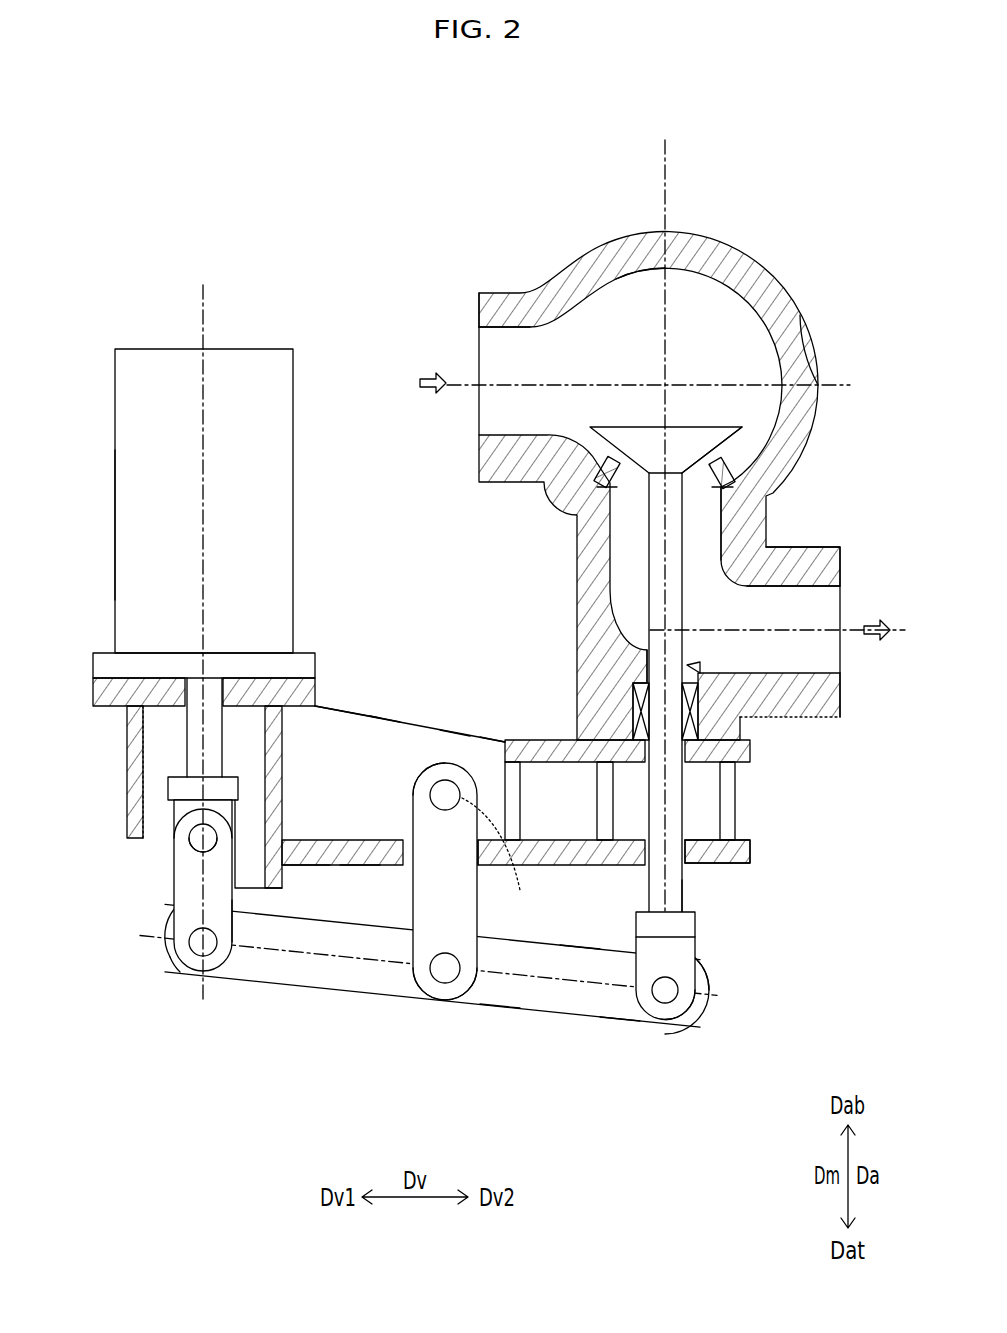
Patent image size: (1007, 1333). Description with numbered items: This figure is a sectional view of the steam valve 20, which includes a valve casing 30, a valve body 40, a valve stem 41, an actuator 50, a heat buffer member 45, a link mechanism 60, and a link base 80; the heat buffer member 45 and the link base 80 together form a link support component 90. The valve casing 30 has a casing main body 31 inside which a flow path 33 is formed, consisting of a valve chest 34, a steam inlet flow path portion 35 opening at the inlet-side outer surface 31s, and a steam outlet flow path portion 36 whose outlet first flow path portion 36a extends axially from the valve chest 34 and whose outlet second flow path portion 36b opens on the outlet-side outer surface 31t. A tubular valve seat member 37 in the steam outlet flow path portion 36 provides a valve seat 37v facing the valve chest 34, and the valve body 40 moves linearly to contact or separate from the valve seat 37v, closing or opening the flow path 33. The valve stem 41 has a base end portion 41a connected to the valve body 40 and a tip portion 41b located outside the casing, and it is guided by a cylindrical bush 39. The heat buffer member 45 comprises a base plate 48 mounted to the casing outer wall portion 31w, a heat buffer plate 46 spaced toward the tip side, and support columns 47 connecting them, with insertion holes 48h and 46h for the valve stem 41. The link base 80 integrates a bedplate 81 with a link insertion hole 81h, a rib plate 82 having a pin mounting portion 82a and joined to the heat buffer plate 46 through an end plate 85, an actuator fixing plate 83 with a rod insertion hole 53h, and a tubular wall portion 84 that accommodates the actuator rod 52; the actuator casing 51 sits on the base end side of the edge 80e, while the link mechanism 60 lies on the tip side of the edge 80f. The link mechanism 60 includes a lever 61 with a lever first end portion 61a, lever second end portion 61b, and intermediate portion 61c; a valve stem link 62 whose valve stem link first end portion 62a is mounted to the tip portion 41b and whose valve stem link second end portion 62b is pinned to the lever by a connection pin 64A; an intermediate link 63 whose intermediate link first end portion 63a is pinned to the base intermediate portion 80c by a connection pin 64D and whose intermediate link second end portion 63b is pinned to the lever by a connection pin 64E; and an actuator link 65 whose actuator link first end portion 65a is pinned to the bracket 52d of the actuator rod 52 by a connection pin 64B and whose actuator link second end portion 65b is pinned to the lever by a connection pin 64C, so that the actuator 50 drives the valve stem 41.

The steam valve 20 is at (752, 222).
The valve casing 30 is at (808, 285).
The casing main body 31 is at (805, 325).
The inlet-side outer surface 31s is at (478, 305).
The outlet-side outer surface 31t is at (842, 712).
The casing outer wall portion 31w is at (790, 718).
The flow path 33 is at (710, 520).
The valve chest 34 is at (613, 275).
The steam inlet flow path portion 35 is at (480, 337).
The steam outlet flow path portion 36 is at (700, 650).
The outlet first flow path portion 36a is at (618, 537).
The outlet second flow path portion 36b is at (842, 562).
The valve seat member 37 is at (730, 472).
The valve seat 37v is at (600, 452).
The bush 39 is at (640, 707).
The valve body 40 is at (760, 433).
The valve stem 41 is at (684, 607).
The base end portion 41a is at (745, 432).
The tip portion 41b is at (700, 905).
The heat buffer member 45 is at (764, 862).
The heat buffer plate 46 is at (752, 850).
The insertion hole 46h is at (702, 862).
The support column 47 is at (597, 803).
The base plate 48 is at (752, 752).
The insertion hole 48h is at (737, 785).
The actuator 50 is at (302, 360).
The actuator casing 51 is at (112, 560).
The actuator rod 52 is at (187, 735).
The bracket 52d is at (168, 790).
The rod insertion hole 53h is at (198, 688).
The link mechanism 60 is at (640, 1032).
The lever 61 is at (392, 1005).
The lever first end portion 61a is at (707, 1003).
The lever second end portion 61b is at (170, 975).
The intermediate portion 61c is at (482, 1005).
The valve stem link 62 is at (700, 975).
The valve stem link first end portion 62a is at (697, 925).
The valve stem link second end portion 62b is at (700, 1012).
The intermediate link 63 is at (477, 955).
The intermediate link first end portion 63a is at (428, 765).
The intermediate link second end portion 63b is at (445, 1003).
The connection pin 64A is at (680, 992).
The connection pin 64B is at (200, 852).
The connection pin 64C is at (203, 960).
The connection pin 64D is at (430, 795).
The connection pin 64E is at (430, 972).
The actuator link 65 is at (174, 905).
The actuator link first end portion 65a is at (178, 808).
The actuator link second end portion 65b is at (230, 962).
The link base 80 is at (402, 710).
The base intermediate portion 80c is at (455, 735).
The edge 80e is at (302, 868).
The edge 80f is at (377, 716).
The bedplate 81 is at (363, 868).
The link insertion hole 81h is at (500, 950).
The rib plate 82 is at (348, 712).
The pin mounting portion 82a is at (588, 872).
The actuator fixing plate 83 is at (93, 692).
The tubular wall portion 84 is at (127, 780).
The end plate 85 is at (488, 738).
The link support component 90 is at (622, 1030).